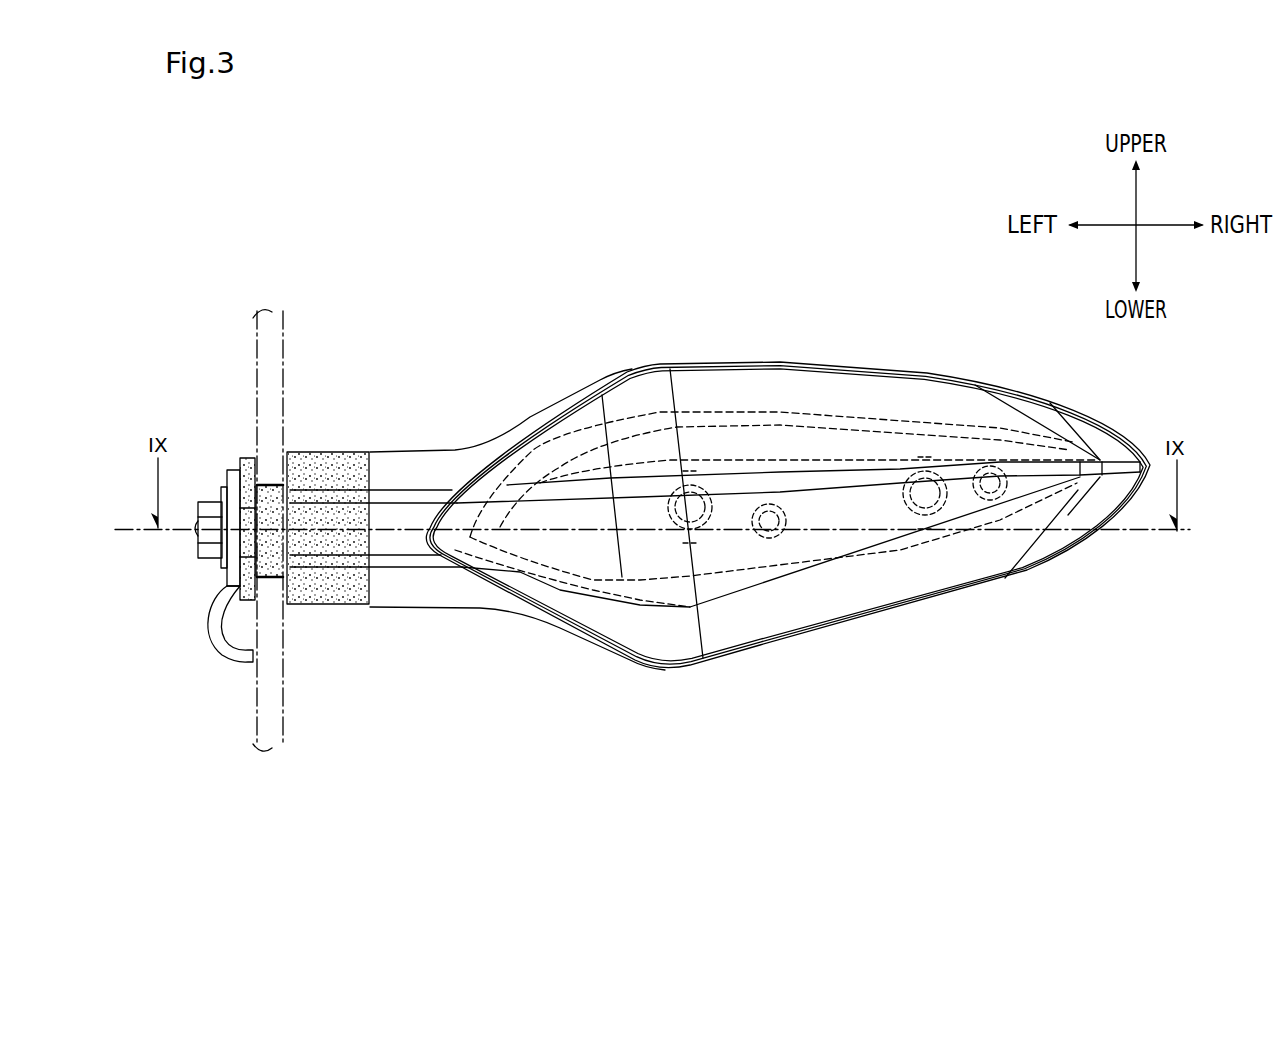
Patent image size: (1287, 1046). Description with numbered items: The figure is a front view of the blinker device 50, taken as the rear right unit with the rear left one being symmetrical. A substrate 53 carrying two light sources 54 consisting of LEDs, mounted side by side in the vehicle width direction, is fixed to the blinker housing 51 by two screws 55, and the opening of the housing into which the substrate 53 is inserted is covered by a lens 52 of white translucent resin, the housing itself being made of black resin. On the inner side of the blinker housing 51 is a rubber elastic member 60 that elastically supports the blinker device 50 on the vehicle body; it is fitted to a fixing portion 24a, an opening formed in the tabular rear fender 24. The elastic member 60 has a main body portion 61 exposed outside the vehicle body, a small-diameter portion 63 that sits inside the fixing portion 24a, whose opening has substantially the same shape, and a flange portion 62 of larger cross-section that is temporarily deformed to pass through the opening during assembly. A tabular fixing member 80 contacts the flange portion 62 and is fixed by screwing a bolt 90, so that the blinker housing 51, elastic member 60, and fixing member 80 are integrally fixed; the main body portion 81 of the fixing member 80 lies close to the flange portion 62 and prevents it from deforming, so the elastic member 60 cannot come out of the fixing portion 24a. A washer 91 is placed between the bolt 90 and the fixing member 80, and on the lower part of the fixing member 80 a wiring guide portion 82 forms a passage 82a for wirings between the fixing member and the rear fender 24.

The rear fender 24 is at (285, 694).
The fixing portion 24a is at (273, 496).
The blinker device 50 is at (851, 253).
The blinker housing 51 is at (493, 440).
The lens 52 is at (844, 387).
The substrate 53 is at (885, 428).
The light source 54 is at (708, 528).
The screw 55 is at (777, 536).
The elastic member 60 is at (315, 448).
The main body portion 61 is at (355, 462).
The flange portion 62 is at (245, 457).
The small-diameter portion 63 is at (270, 582).
The fixing member 80 is at (191, 521).
The main body portion 81 is at (226, 582).
The wiring guide portion 82 is at (214, 637).
The passage 82a is at (242, 622).
The bolt 90 is at (193, 518).
The washer 91 is at (219, 500).